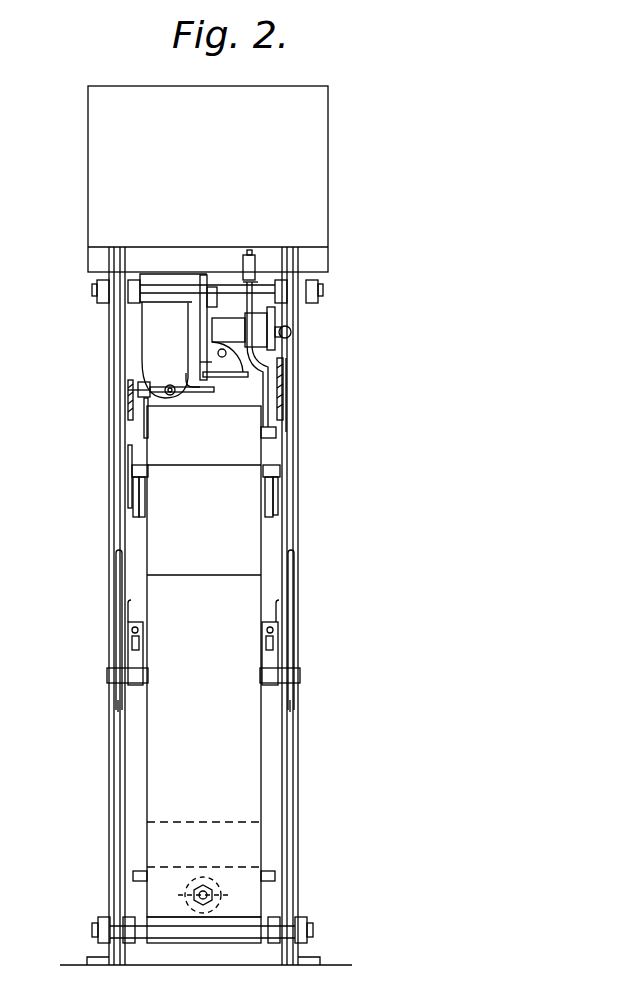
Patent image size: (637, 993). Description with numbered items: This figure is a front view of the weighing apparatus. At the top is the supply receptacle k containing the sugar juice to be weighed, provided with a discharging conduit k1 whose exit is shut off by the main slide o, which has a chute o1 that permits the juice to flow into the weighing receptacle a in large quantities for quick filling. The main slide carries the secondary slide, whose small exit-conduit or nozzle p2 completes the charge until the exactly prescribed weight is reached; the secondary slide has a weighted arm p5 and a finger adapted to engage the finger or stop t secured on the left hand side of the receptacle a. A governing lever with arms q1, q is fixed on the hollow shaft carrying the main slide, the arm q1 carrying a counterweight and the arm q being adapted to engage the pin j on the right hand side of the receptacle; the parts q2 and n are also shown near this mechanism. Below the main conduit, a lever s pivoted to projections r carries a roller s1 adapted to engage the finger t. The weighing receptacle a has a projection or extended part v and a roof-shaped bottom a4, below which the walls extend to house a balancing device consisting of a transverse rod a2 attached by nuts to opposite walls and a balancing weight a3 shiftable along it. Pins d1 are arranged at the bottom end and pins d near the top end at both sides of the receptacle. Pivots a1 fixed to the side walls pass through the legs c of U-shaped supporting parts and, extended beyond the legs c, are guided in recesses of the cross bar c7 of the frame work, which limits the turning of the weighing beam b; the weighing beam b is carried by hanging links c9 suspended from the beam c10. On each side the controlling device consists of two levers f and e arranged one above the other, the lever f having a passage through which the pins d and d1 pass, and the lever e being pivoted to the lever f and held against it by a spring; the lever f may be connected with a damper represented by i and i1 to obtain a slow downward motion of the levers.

The supply receptacle k is at (208, 179).
The discharging conduit k1 is at (165, 350).
The weighted arm p5 is at (208, 275).
The governing lever arm q1 is at (249, 255).
The connection q2 is at (256, 264).
The governing lever arm q is at (270, 426).
The pin j is at (261, 437).
The cylinder n is at (251, 323).
The main slide o is at (203, 360).
The chute o1 is at (236, 377).
The projections r is at (170, 396).
The lever s is at (203, 393).
The roller s1 is at (138, 385).
The exit-conduit or nozzle p2 is at (224, 358).
The damper i is at (128, 448).
The damper i1 is at (318, 401).
The finger or stop t is at (144, 405).
The lever e is at (132, 470).
The pins d is at (140, 490).
The lever f is at (135, 505).
The legs c is at (132, 630).
The weighing beam b is at (132, 643).
The cross bar c7 is at (320, 723).
The hanging links c9 is at (130, 603).
The beam c10 is at (322, 585).
The weighing receptacle a is at (204, 661).
The pivots a1 is at (318, 688).
The transverse rod a2 is at (193, 895).
The balancing weight a3 is at (216, 895).
The bottom of the receptacle a4 is at (204, 828).
The projection or extended part v is at (204, 507).
The pins d1 is at (318, 879).